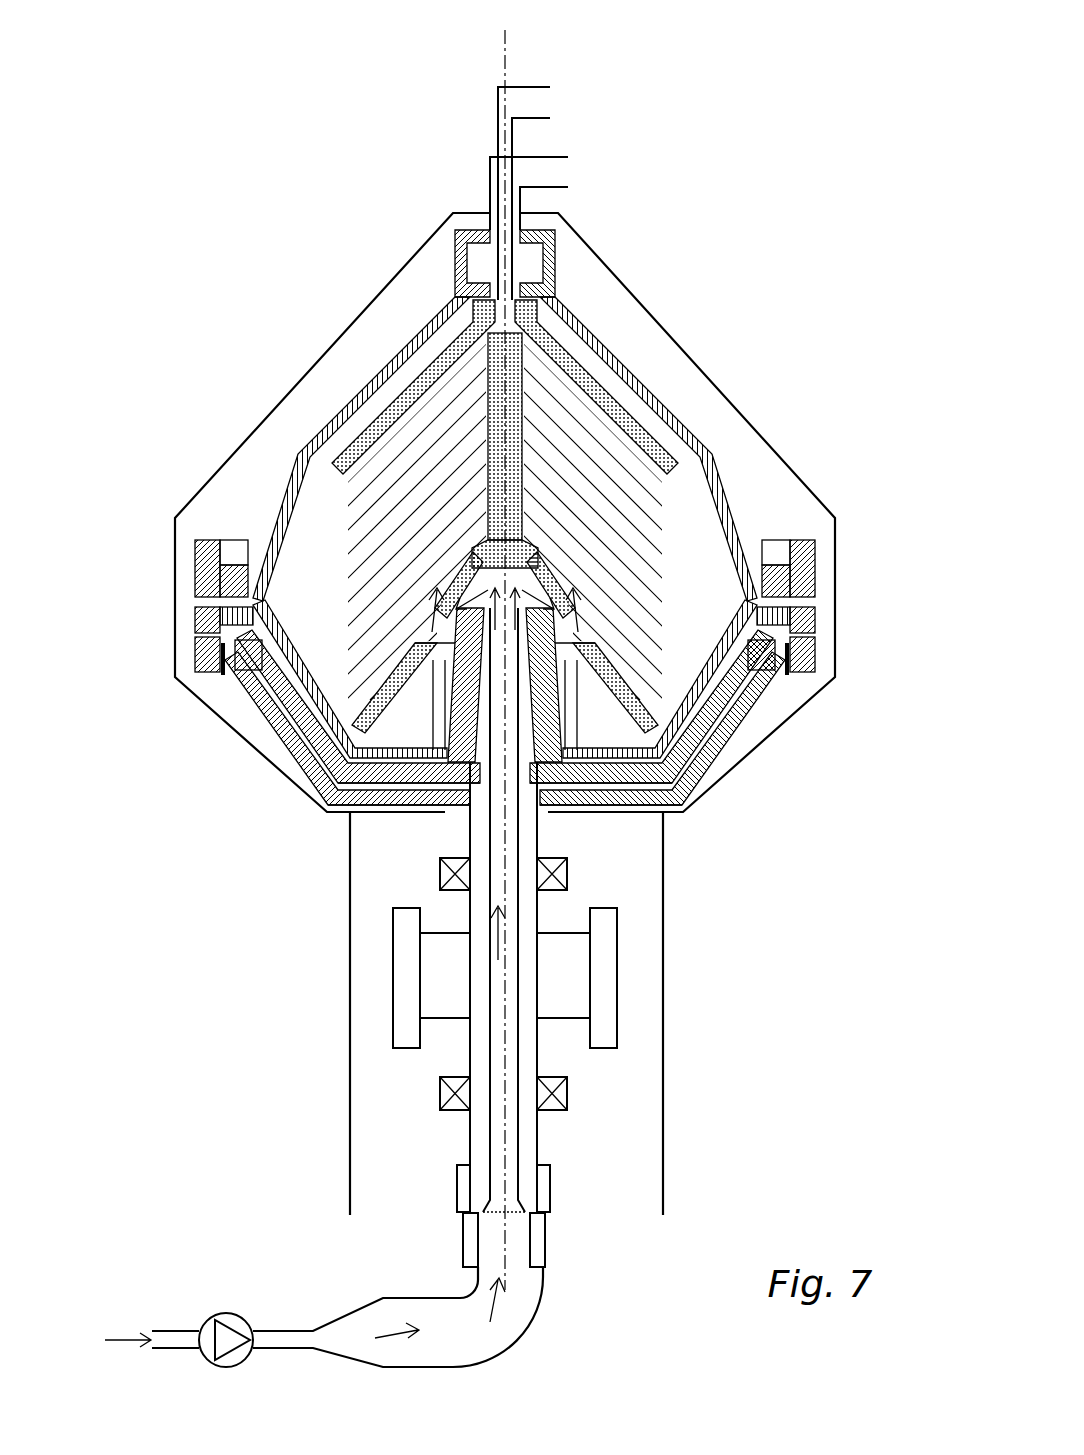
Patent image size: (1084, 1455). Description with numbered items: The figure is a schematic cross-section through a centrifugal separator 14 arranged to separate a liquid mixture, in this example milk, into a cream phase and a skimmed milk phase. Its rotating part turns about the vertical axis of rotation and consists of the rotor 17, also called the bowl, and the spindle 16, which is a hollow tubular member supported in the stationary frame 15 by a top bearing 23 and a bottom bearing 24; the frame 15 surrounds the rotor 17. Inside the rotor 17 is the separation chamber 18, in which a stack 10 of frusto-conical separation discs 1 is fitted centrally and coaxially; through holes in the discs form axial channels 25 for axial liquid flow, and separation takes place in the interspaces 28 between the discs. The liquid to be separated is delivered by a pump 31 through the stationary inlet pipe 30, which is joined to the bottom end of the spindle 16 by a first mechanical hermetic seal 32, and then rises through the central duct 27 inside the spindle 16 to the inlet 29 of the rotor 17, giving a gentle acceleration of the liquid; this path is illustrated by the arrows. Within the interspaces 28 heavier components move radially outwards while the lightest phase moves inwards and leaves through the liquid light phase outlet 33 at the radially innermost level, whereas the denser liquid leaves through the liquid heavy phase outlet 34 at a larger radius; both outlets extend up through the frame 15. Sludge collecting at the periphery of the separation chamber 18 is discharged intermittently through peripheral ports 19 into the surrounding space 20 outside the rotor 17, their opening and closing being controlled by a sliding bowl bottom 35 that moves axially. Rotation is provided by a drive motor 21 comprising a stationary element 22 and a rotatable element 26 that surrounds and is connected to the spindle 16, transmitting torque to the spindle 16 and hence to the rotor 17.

The frusto-conical separation disc 1 is at (355, 500).
The stack of separation discs 10 is at (330, 578).
The centrifugal separator 14 is at (275, 205).
The stationary frame 15 is at (773, 440).
The spindle 16 is at (532, 835).
The rotor 17 is at (605, 360).
The separation chamber 18 is at (300, 552).
The peripheral ports 19 is at (805, 605).
The surrounding space 20 is at (825, 528).
The drive motor 21 is at (645, 947).
The stationary element 22 is at (607, 966).
The top bearing 23 is at (577, 870).
The bottom bearing 24 is at (557, 1093).
The axial channels 25 is at (418, 412).
The rotatable element 26 is at (578, 1003).
The central duct 27 is at (495, 987).
The interspaces 28 is at (350, 657).
The inlet 29 is at (527, 578).
The stationary inlet pipe 30 is at (523, 1313).
The pump 31 is at (225, 1312).
The first mechanical hermetic seal 32 is at (562, 1235).
The liquid light phase outlet 33 is at (540, 107).
The liquid heavy phase outlet 34 is at (572, 173).
The sliding bowl bottom 35 is at (330, 725).